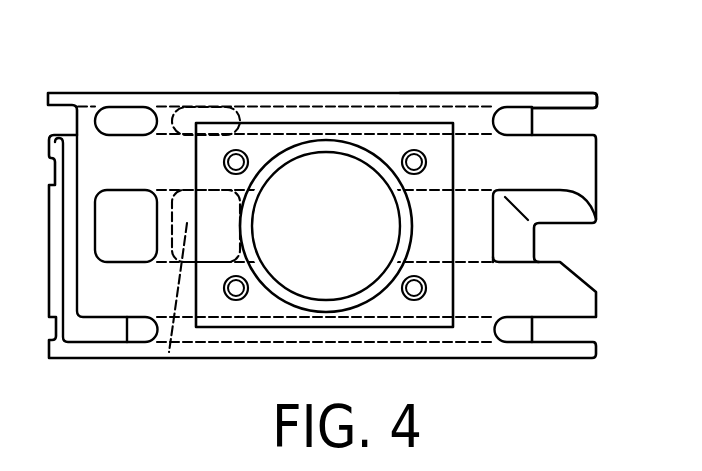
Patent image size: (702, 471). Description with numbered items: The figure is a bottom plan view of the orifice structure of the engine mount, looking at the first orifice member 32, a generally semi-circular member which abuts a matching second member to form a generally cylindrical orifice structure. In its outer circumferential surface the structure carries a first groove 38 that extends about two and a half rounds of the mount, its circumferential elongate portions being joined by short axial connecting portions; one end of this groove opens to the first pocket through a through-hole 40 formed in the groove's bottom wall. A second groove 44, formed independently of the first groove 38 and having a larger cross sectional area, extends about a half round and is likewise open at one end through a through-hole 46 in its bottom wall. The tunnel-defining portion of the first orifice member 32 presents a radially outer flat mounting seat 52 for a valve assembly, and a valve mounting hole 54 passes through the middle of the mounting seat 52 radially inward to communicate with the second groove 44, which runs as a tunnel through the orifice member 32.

The first orifice member 32 is at (487, 62).
The first groove 38 is at (565, 93).
The through-hole 40 is at (180, 113).
The second groove 44 is at (555, 259).
The through-hole 46 is at (172, 340).
The mounting seat 52 is at (392, 300).
The valve mounting hole 54 is at (357, 164).